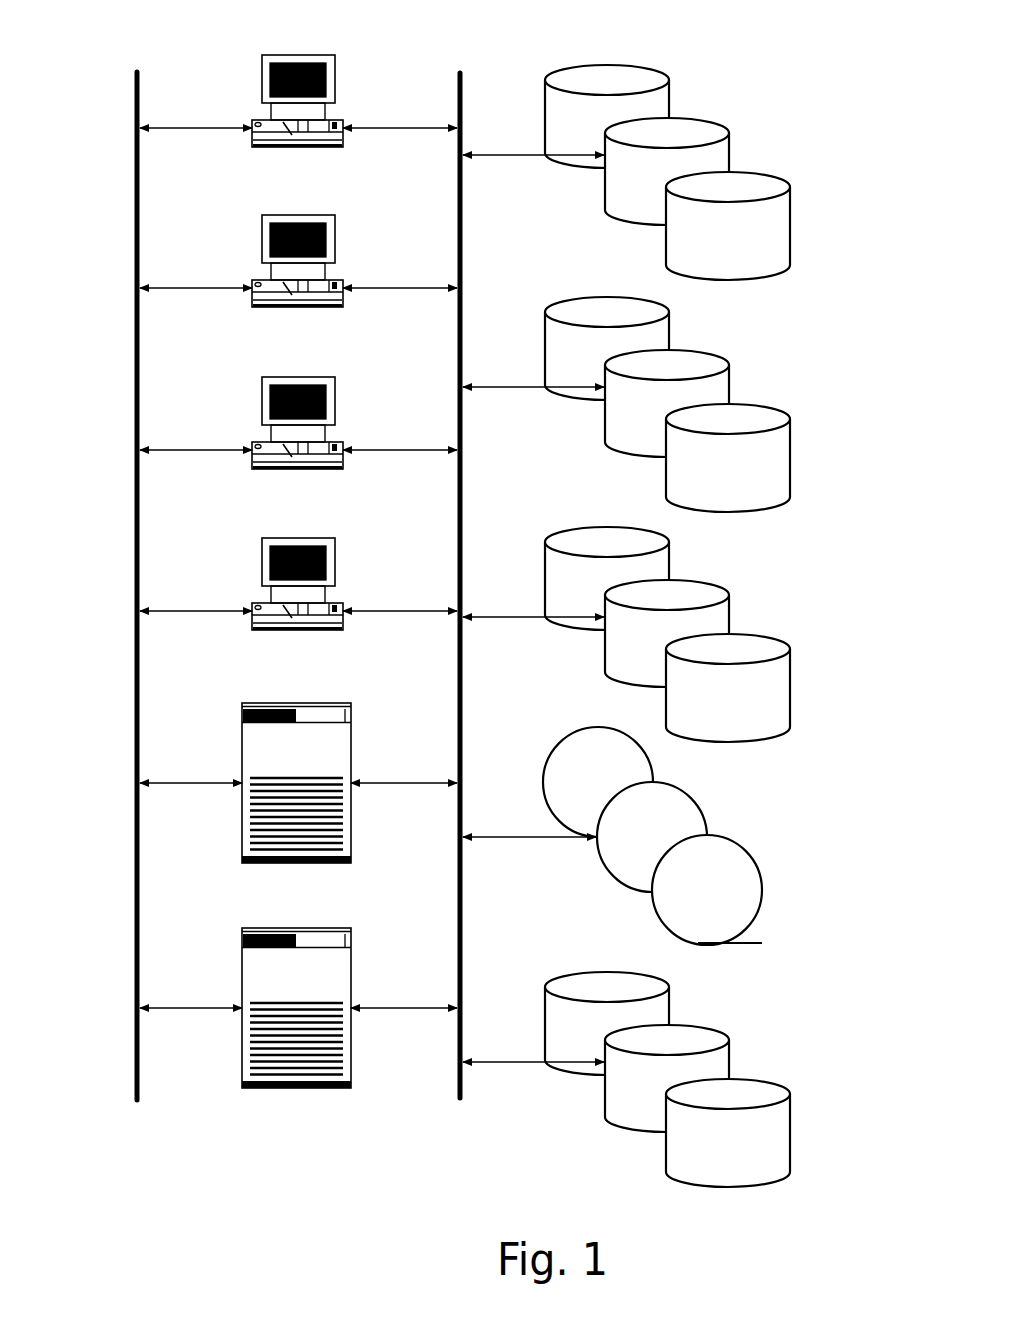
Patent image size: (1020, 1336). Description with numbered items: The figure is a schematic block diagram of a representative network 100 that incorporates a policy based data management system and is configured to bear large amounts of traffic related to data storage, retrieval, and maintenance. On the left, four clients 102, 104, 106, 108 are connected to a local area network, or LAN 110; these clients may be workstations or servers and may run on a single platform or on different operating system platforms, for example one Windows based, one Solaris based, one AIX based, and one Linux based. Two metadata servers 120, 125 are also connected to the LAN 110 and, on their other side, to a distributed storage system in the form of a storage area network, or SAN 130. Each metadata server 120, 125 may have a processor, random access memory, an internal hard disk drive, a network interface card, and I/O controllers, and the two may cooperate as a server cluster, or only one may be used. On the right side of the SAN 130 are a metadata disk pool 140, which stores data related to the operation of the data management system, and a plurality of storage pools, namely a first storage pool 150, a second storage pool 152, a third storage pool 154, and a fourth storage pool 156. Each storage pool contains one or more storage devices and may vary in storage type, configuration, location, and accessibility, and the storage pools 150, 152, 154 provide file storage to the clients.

The network 100 is at (846, 76).
The local area network (LAN) 110 is at (135, 100).
The storage area network (SAN) 130 is at (462, 98).
The client 102 is at (335, 80).
The client 104 is at (335, 240).
The client 106 is at (335, 402).
The client 108 is at (335, 563).
The metadata server 120 is at (351, 752).
The metadata server 125 is at (351, 975).
The first storage pool 150 is at (730, 141).
The second storage pool 152 is at (730, 373).
The third storage pool 154 is at (730, 604).
The metadata disk pool 140 is at (730, 1055).
The fourth storage pool 156 is at (758, 868).